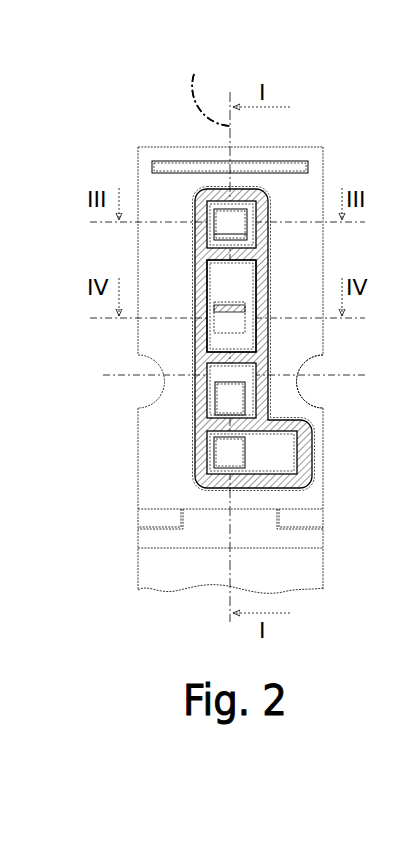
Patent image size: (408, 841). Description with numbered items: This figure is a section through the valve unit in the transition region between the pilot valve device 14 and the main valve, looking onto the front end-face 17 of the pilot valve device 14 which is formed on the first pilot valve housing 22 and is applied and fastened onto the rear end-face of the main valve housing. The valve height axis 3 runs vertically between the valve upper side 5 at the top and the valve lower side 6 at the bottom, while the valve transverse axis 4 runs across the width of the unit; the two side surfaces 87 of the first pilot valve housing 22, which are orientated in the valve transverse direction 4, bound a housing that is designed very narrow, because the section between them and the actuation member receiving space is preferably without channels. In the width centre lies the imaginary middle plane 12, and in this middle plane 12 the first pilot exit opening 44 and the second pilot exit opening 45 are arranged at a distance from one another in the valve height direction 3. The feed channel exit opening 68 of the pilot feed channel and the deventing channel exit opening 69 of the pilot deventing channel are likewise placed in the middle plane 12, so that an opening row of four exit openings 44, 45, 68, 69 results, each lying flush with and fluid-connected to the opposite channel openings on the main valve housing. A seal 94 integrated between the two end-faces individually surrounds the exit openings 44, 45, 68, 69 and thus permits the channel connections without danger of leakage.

The pilot valve device 14 is at (139, 132).
The valve height axis 3 is at (196, 84).
The middle plane 12 is at (211, 100).
The valve upper side 5 is at (309, 131).
The side surfaces 87 is at (137, 166).
The first pilot valve housing 22 is at (305, 262).
The second pilot exit opening 45 is at (216, 220).
The first pilot exit opening 44 is at (240, 323).
The seal 94 is at (205, 330).
The feed channel exit opening 68 is at (216, 395).
The deventing channel exit opening 69 is at (242, 447).
The valve transverse axis 4 is at (319, 374).
The front end-face 17 is at (164, 463).
The valve lower side 6 is at (171, 598).